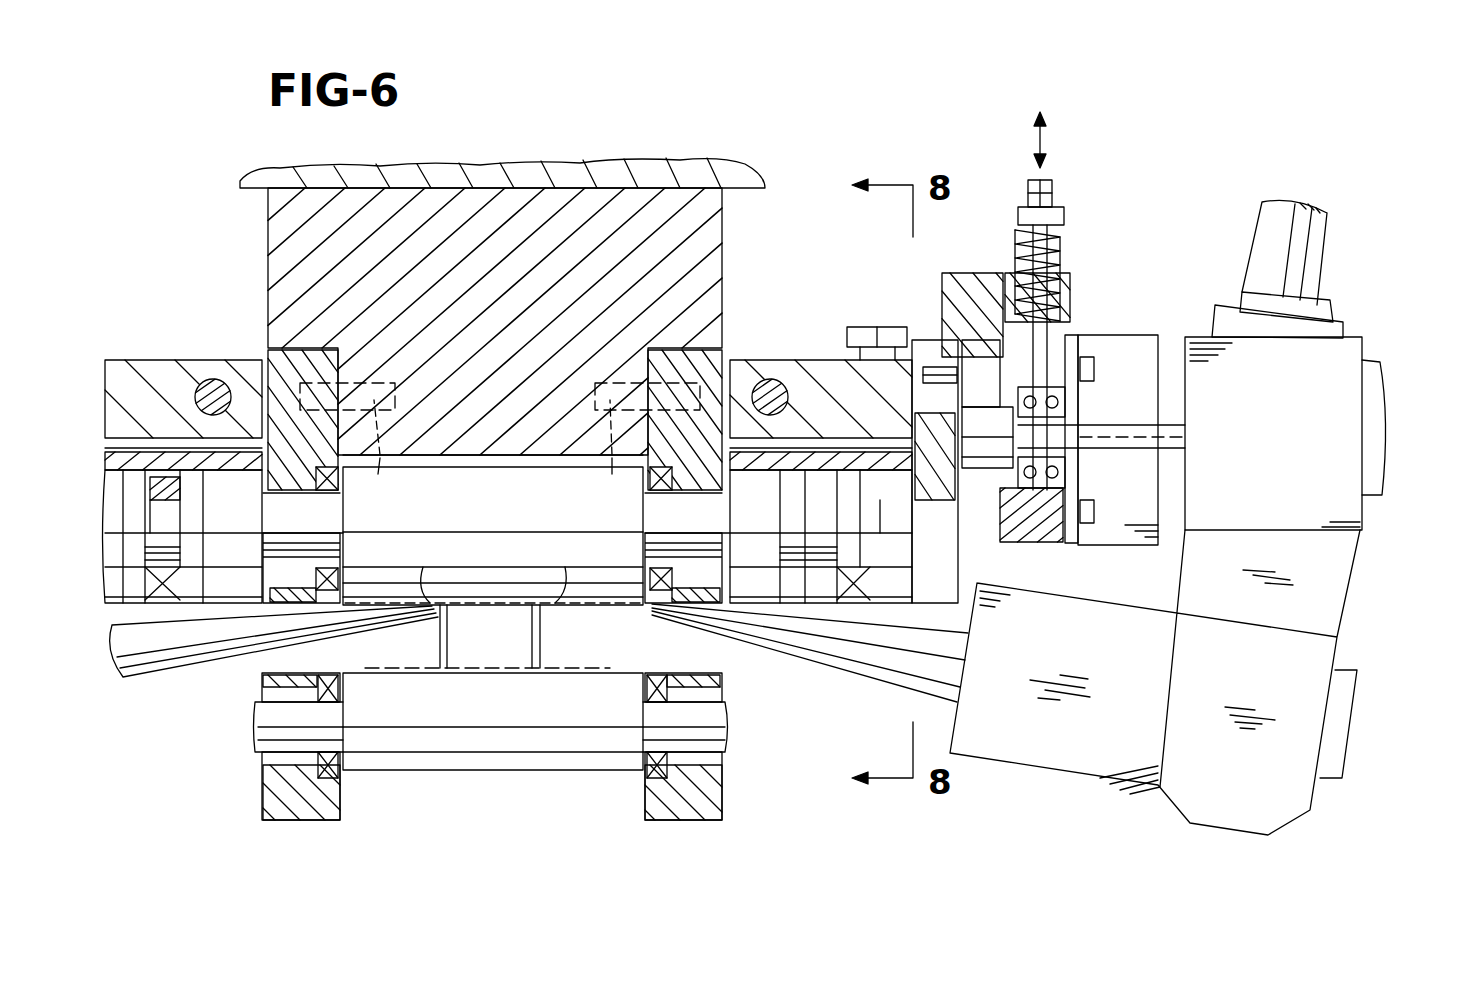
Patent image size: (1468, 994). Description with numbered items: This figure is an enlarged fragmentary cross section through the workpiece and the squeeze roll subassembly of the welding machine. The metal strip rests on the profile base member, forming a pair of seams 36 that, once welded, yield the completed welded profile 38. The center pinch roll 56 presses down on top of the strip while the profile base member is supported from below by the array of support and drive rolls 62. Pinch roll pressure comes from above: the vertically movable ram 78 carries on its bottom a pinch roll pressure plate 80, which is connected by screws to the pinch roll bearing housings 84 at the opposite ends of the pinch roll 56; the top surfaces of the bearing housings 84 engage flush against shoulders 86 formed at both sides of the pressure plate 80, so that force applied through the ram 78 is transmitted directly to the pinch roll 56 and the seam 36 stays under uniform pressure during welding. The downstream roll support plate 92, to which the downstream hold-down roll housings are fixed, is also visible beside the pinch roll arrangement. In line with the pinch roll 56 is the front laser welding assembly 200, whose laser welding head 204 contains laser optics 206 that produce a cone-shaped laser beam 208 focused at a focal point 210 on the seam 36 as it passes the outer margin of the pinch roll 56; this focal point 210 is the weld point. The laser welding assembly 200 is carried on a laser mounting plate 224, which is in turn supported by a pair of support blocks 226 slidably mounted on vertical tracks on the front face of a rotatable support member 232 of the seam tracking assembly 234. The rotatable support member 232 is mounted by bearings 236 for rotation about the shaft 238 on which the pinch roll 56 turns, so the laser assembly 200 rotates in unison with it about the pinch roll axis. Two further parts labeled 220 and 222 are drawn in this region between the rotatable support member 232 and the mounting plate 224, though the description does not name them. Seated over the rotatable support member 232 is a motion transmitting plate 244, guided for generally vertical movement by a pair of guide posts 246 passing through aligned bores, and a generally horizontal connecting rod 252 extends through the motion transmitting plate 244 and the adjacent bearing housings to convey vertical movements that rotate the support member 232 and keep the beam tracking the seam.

The seam 36 is at (496, 570).
The welded profile 38 is at (424, 645).
The center pinch roll 56 is at (510, 512).
The support and drive rolls 62 is at (490, 745).
The ram 78 is at (523, 168).
The pinch roll pressure plate 80 is at (598, 216).
The pinch roll bearing housings 84 is at (290, 372).
The shoulders 86 is at (293, 342).
The roll support plate 92 is at (493, 456).
The front laser welding assembly 200 is at (1357, 306).
The laser welding head 204 is at (1370, 356).
The laser optics 206 is at (1172, 812).
The laser beam 208 is at (147, 672).
The focal point 210 is at (545, 616).
The bearing housing 220 is at (1002, 425).
The spring-loaded block 222 is at (982, 350).
The laser mounting plate 224 is at (1080, 347).
The support blocks 226 is at (1150, 372).
The rotatable support member 232 is at (167, 468).
The seam tracking assembly 234 is at (124, 340).
The bearings 236 is at (140, 560).
The shaft 238 is at (335, 530).
The motion transmitting plate 244 is at (155, 375).
The guide posts 246 is at (890, 325).
The connecting rod 252 is at (210, 382).